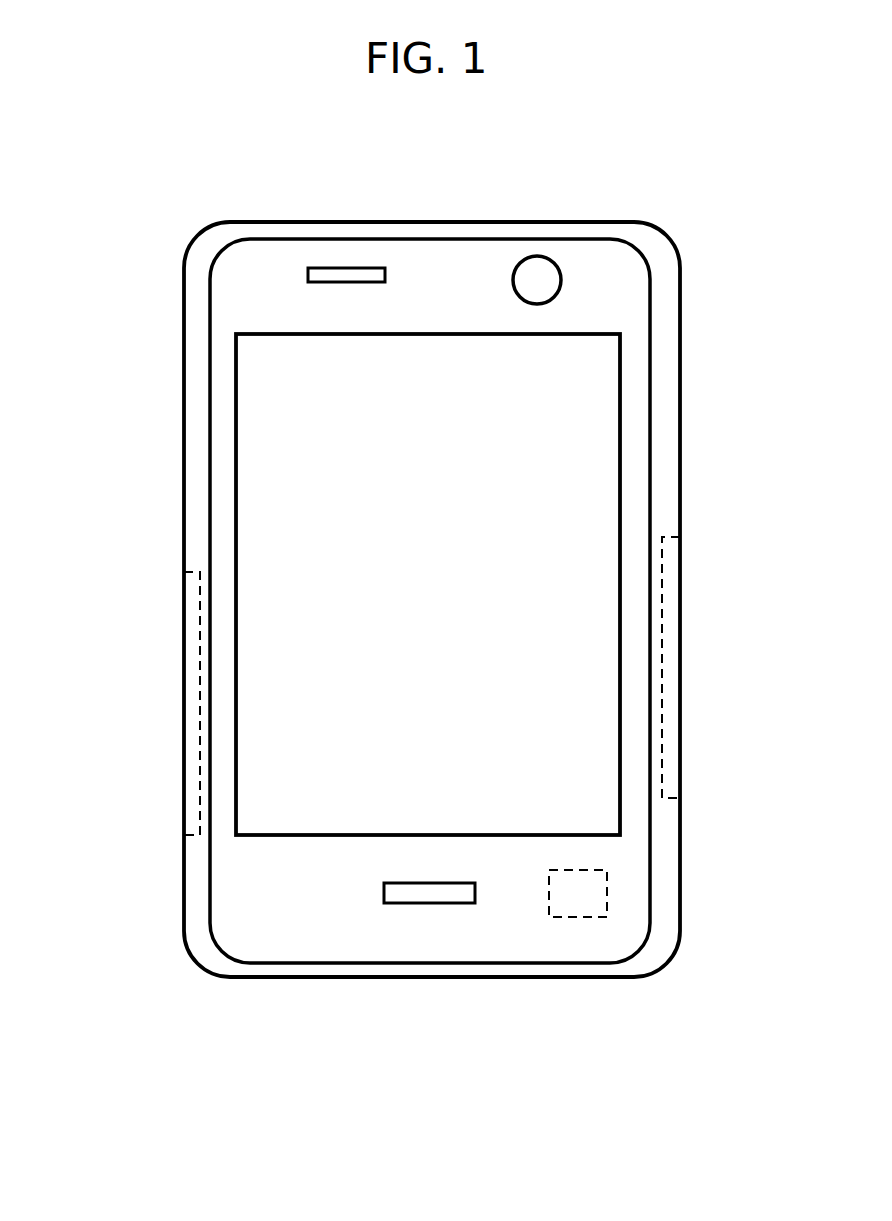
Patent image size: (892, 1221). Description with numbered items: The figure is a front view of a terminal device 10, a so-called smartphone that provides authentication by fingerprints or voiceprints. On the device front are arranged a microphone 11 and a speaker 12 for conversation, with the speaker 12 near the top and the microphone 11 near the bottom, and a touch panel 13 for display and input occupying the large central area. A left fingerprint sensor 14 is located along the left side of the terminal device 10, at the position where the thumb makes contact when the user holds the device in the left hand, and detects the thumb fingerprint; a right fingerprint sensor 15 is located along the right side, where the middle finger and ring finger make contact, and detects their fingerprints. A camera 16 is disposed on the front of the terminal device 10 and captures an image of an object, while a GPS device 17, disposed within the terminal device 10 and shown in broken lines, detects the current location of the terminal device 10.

The terminal device 10 is at (567, 222).
The microphone 11 is at (430, 903).
The speaker 12 is at (347, 268).
The touch panel 13 is at (620, 468).
The left fingerprint sensor 14 is at (184, 632).
The right fingerprint sensor 15 is at (680, 540).
The camera 16 is at (560, 276).
The GPS device 17 is at (577, 917).